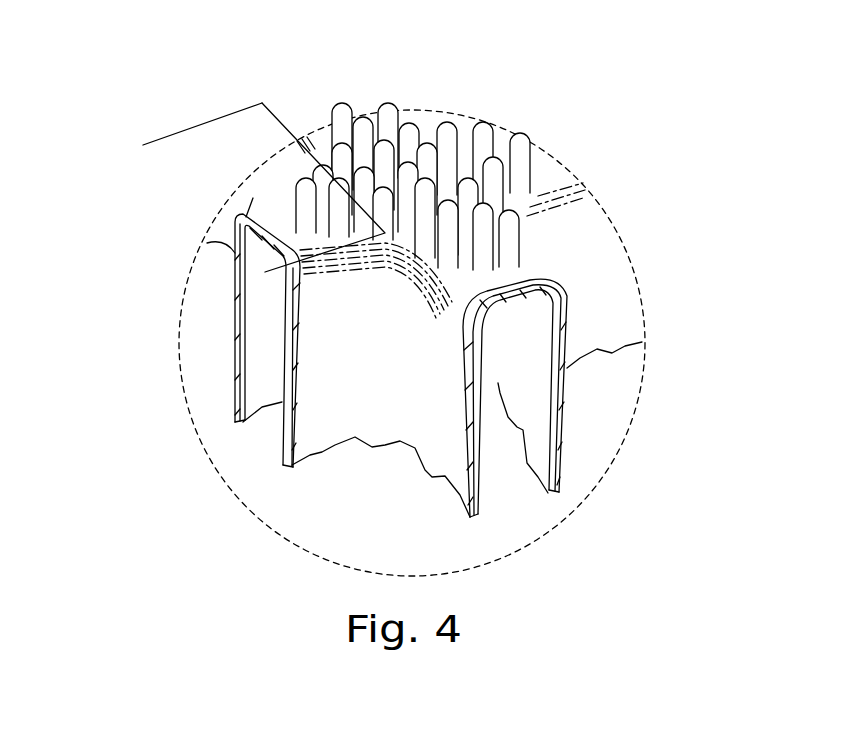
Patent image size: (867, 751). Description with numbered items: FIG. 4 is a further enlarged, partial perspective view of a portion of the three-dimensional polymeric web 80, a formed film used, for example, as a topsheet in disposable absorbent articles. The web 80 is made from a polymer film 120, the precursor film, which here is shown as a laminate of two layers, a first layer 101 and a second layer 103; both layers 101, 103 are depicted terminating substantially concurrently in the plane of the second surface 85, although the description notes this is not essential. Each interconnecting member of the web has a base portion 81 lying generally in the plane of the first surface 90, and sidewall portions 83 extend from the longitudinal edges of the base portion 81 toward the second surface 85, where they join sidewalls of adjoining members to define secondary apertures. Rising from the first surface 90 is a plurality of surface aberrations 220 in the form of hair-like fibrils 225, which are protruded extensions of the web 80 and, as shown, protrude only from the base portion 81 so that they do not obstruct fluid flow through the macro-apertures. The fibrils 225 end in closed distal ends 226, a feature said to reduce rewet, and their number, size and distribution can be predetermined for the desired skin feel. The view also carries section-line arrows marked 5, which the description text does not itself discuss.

The section line 5- 5 is at (253, 204).
The polymeric web 80 is at (652, 232).
The base portion 81 is at (238, 216).
The sidewall portions 83 is at (235, 297).
The second surface 85 is at (613, 353).
The first surface 90 is at (558, 135).
The first layer 101 is at (235, 323).
The second layer 103 is at (281, 242).
The polymer film 120 is at (452, 431).
The surface aberrations 220 is at (448, 233).
The hair-like fibrils 225 is at (388, 102).
The distal ends 226 is at (527, 137).